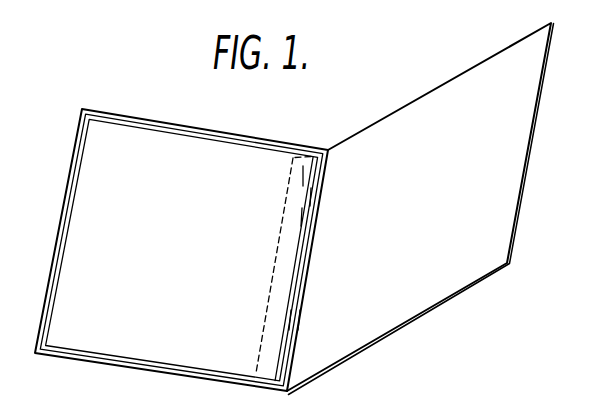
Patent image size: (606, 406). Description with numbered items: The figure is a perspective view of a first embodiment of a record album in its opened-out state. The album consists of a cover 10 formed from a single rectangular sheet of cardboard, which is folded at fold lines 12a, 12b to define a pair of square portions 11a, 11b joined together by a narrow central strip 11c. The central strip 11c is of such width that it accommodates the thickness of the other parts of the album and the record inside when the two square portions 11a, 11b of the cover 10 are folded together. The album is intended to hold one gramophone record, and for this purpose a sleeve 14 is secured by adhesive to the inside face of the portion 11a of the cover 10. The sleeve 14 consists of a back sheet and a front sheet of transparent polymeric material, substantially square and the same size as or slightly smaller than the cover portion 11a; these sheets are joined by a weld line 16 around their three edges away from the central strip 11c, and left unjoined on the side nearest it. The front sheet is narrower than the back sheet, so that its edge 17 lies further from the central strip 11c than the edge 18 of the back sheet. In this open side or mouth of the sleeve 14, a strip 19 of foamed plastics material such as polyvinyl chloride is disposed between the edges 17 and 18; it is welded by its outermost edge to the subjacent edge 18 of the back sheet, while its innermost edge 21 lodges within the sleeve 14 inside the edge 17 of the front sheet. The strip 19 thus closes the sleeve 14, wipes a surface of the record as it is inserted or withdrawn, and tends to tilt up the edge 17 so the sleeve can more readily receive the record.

The cover 10 is at (335, 363).
The square portion of cover 11a is at (208, 131).
The square portion of cover 11b is at (462, 183).
The central strip 11c is at (307, 268).
The fold line 12a is at (293, 318).
The fold line 12b is at (300, 321).
The sleeve 14 is at (77, 215).
The weld line 16 is at (113, 121).
The edge of front sheet 17 is at (303, 176).
The edge of back sheet 18 is at (308, 197).
The strip of foamed plastics material 19 is at (288, 218).
The innermost edge of strip 21 is at (278, 251).